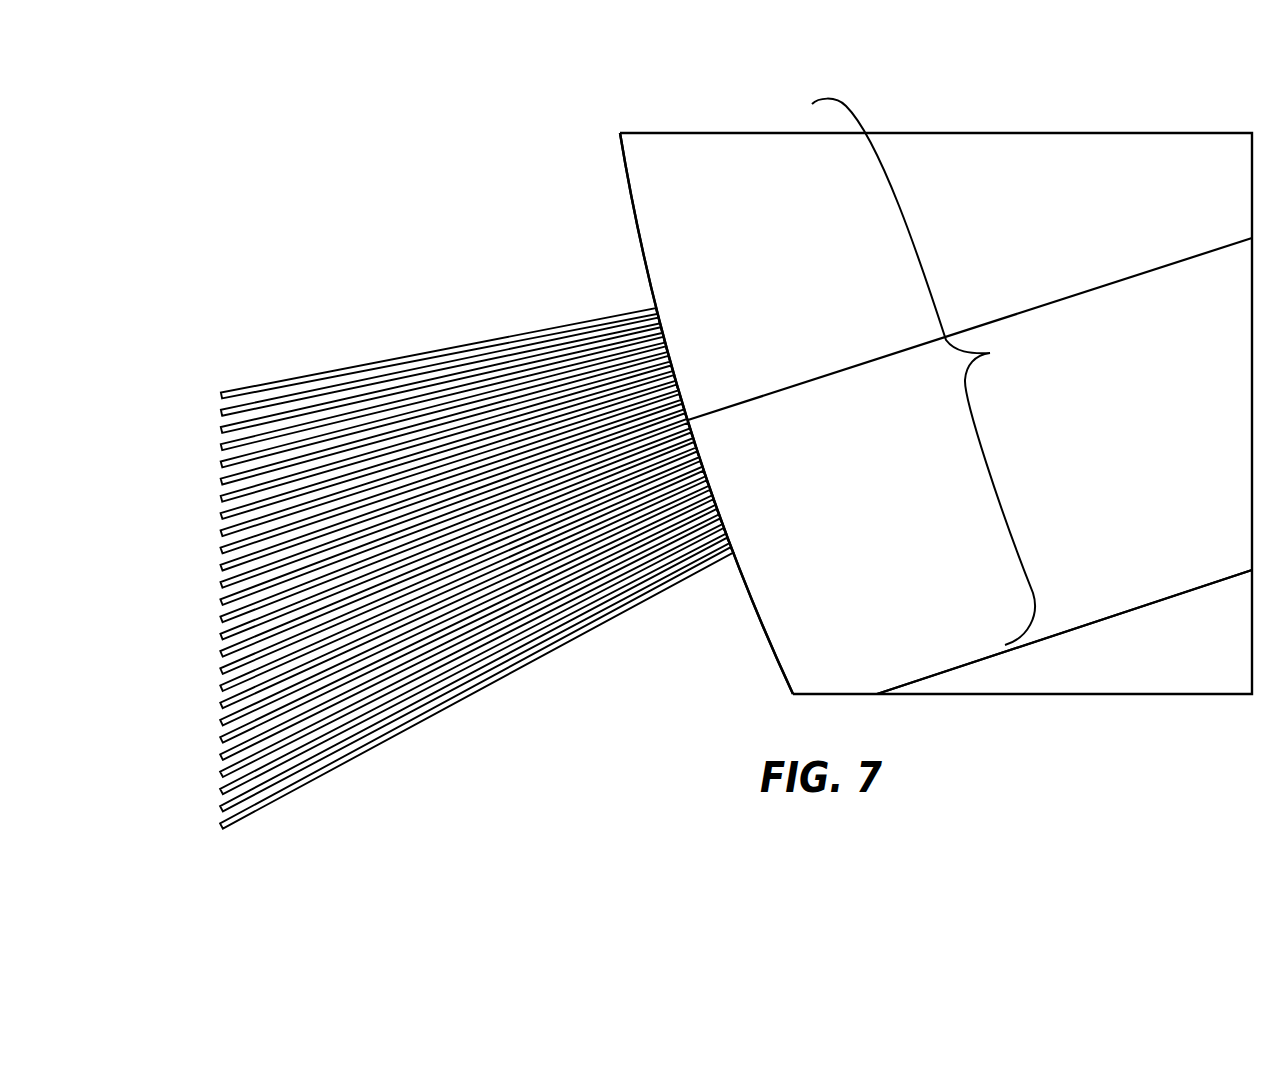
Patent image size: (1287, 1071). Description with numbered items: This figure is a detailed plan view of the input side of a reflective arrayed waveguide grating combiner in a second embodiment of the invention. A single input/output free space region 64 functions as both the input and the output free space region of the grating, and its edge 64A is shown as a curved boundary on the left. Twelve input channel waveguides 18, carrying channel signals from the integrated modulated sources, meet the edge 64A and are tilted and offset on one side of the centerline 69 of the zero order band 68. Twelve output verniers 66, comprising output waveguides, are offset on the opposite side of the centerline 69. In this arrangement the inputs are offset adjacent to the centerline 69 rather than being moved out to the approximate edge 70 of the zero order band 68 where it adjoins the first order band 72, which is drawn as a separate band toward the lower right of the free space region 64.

The input/output free space region 64 is at (1043, 157).
The edge of free space region 64A is at (633, 179).
The output verniers 66 is at (696, 418).
The channel waveguides 18 is at (697, 427).
The zero order band 68 is at (988, 372).
The centerline of zero order band 69 is at (1068, 300).
The approximate edge of zero order band 70 is at (1071, 622).
The first order band 72 is at (1064, 660).